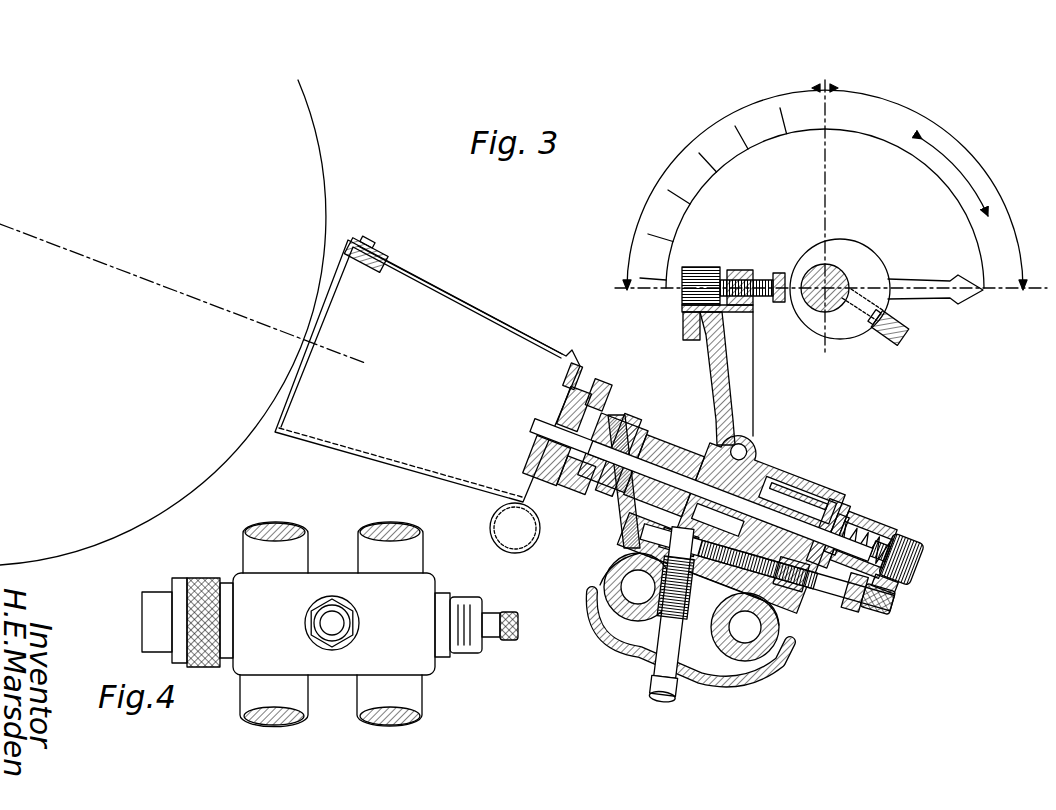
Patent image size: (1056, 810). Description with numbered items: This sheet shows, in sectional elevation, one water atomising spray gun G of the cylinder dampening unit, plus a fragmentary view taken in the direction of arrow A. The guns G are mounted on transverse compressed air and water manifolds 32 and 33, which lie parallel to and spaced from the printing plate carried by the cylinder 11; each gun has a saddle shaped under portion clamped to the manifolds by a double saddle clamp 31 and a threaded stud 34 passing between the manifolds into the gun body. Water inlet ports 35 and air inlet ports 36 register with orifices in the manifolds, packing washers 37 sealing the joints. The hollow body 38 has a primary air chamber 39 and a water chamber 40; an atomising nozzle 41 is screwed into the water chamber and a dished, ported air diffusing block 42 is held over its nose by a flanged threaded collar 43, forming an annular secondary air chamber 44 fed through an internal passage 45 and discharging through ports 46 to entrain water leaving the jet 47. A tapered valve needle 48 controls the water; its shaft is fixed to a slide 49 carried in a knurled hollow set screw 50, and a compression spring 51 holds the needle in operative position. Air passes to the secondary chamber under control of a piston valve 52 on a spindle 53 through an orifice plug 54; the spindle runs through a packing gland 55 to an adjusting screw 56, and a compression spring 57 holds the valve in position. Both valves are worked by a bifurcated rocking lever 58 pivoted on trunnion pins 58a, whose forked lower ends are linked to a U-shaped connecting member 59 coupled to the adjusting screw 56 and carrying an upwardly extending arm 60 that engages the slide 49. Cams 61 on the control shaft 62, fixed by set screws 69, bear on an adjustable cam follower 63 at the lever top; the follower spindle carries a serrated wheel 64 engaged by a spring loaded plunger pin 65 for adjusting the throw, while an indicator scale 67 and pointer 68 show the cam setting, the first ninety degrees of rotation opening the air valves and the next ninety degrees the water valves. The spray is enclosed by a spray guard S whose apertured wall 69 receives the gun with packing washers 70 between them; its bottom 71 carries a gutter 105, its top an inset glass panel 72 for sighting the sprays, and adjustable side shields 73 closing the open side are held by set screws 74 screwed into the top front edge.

In FIG. 3, the printing plate cylinder 11 is at (323, 165).
In FIG. 3, the double saddle clamps 31 is at (762, 688).
In FIG. 4, the double saddle clamps 31 is at (283, 600).
In FIG. 3, the compressed air manifold 32 is at (730, 687).
In FIG. 4, the compressed air manifold 32 is at (407, 687).
In FIG. 3, the water manifold 33 is at (627, 608).
In FIG. 4, the water manifold 33 is at (257, 702).
In FIG. 3, the threaded studs 34 is at (648, 677).
In FIG. 4, the threaded studs 34 is at (350, 620).
In FIG. 3, the water inlet ports 35 is at (623, 550).
In FIG. 3, the air inlet ports 36 is at (777, 608).
In FIG. 3, the packing washers 37 is at (778, 613).
In FIG. 3, the hollow body 38 is at (803, 483).
In FIG. 3, the primary air chamber 39 is at (780, 603).
In FIG. 3, the water chamber 40 is at (650, 455).
In FIG. 3, the atomising nozzle 41 is at (638, 420).
In FIG. 3, the air diffusing block 42 is at (570, 410).
In FIG. 3, the threaded collar 43 is at (583, 495).
In FIG. 4, the threaded collar 43 is at (202, 577).
In FIG. 3, the secondary air chamber 44 is at (606, 414).
In FIG. 3, the internal passage 45 is at (618, 495).
In FIG. 3, the ports 46 is at (547, 458).
In FIG. 3, the jet 47 is at (560, 438).
In FIG. 3, the tapered valve needle 48 is at (722, 452).
In FIG. 3, the slide 49 is at (840, 518).
In FIG. 3, the hollow set screw 50 is at (890, 543).
In FIG. 3, the compression spring 51 is at (852, 533).
In FIG. 3, the piston valve 52 is at (765, 470).
In FIG. 3, the spindle 53 is at (853, 613).
In FIG. 3, the orifice plug 54 is at (655, 640).
In FIG. 3, the packing gland 55 is at (905, 552).
In FIG. 3, the adjusting screw 56 is at (893, 602).
In FIG. 4, the adjusting screw 56 is at (507, 642).
In FIG. 3, the compression spring 57 is at (842, 508).
In FIG. 3, the bifurcated rocking lever 58 is at (755, 388).
In FIG. 3, the trunnion pins 58a is at (715, 395).
In FIG. 3, the U-shaped connecting member 59 is at (898, 568).
In FIG. 4, the U-shaped connecting member 59 is at (480, 607).
In FIG. 3, the upwardly extending arm 60 is at (818, 490).
In FIG. 3, the cams 61 is at (862, 267).
In FIG. 3, the control shaft 62 is at (832, 265).
In FIG. 3, the cam follower 63 is at (778, 273).
In FIG. 3, the serrated wheel 64 is at (707, 270).
In FIG. 3, the bracket 65 is at (687, 313).
In FIG. 3, the indicator scale 67 is at (1000, 242).
In FIG. 3, the pointer 68 is at (962, 305).
In FIG. 3, the set screws 69 is at (892, 340).
In FIG. 3, the packing washers 70 is at (592, 388).
In FIG. 3, the bottom 71 is at (352, 455).
In FIG. 3, the inset glass panel 72 is at (510, 323).
In FIG. 3, the adjustable side shields 73 is at (318, 325).
In FIG. 3, the set screws 74 is at (370, 240).
In FIG. 3, the gutter 105 is at (490, 520).
In FIG. 3, the spray guard S is at (473, 297).
In FIG. 3, the spray guns G is at (760, 427).
In FIG. 3, the arrow A is at (653, 712).